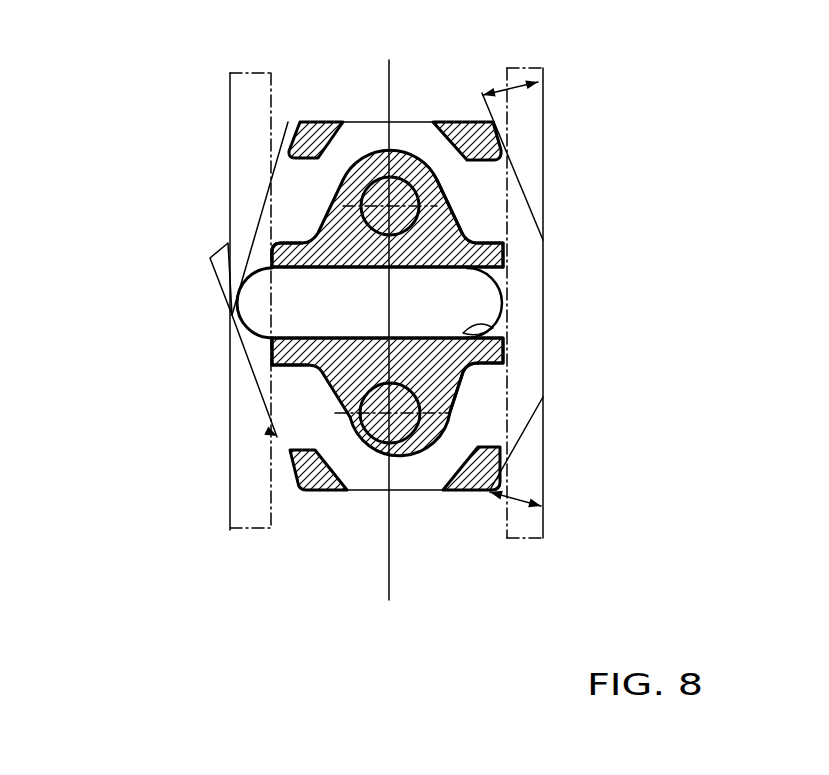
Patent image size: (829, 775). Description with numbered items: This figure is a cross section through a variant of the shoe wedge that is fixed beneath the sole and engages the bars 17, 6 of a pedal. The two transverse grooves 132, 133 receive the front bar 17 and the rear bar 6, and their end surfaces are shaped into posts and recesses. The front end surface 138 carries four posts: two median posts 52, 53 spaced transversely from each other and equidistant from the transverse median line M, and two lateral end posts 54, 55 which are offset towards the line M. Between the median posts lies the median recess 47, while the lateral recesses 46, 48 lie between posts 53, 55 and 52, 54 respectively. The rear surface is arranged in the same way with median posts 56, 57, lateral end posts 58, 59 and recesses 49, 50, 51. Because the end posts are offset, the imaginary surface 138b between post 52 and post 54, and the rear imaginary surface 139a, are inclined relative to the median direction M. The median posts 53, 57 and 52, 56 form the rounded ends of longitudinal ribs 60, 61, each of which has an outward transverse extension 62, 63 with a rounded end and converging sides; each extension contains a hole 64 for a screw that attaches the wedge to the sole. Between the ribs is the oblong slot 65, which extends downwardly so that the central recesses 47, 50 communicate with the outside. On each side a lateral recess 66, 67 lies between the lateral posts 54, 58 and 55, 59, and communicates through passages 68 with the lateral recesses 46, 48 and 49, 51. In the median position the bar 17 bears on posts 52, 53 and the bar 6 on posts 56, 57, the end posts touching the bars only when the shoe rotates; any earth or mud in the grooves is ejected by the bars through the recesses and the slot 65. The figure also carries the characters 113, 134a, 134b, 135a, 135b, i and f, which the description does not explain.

The bar 6 is at (532, 106).
The bar 17 is at (237, 498).
The lateral recess 46 is at (263, 213).
The median recess 47 is at (232, 313).
The lateral recess 48 is at (273, 422).
The lateral recess 49 is at (492, 203).
The central recess 50 is at (497, 283).
The lateral recess 51 is at (487, 386).
The median post 52 is at (272, 341).
The median post 53 is at (228, 243).
The lateral end post 54 is at (311, 492).
The lateral end post 55 is at (311, 134).
The median post 56 is at (500, 352).
The median post 57 is at (498, 254).
The lateral end post 58 is at (489, 491).
The lateral end post 59 is at (483, 130).
The longitudinal rib 60 is at (322, 262).
The longitudinal rib 61 is at (493, 328).
The outward transverse extension 62 is at (375, 177).
The outward transverse extension 63 is at (367, 463).
The hole 64 is at (413, 513).
The oblong slot 65 is at (384, 321).
The lateral recess 66 is at (427, 443).
The lateral recess 67 is at (406, 132).
The passage 68 is at (328, 172).
The arrow direction 113 is at (487, 50).
The transverse groove 132 is at (238, 265).
The transverse groove 133 is at (530, 410).
The left axis line 134a is at (276, 181).
The right axis line 134b is at (628, 466).
The lower left plate edge 135a is at (275, 438).
The upper right plate edge 135b is at (626, 192).
The front end surface 138 is at (279, 147).
The imaginary surface 138b is at (275, 393).
The rear imaginary surface 139a is at (512, 163).
The dimension i is at (516, 67).
The dimension f is at (522, 537).
The transverse median line M is at (393, 563).